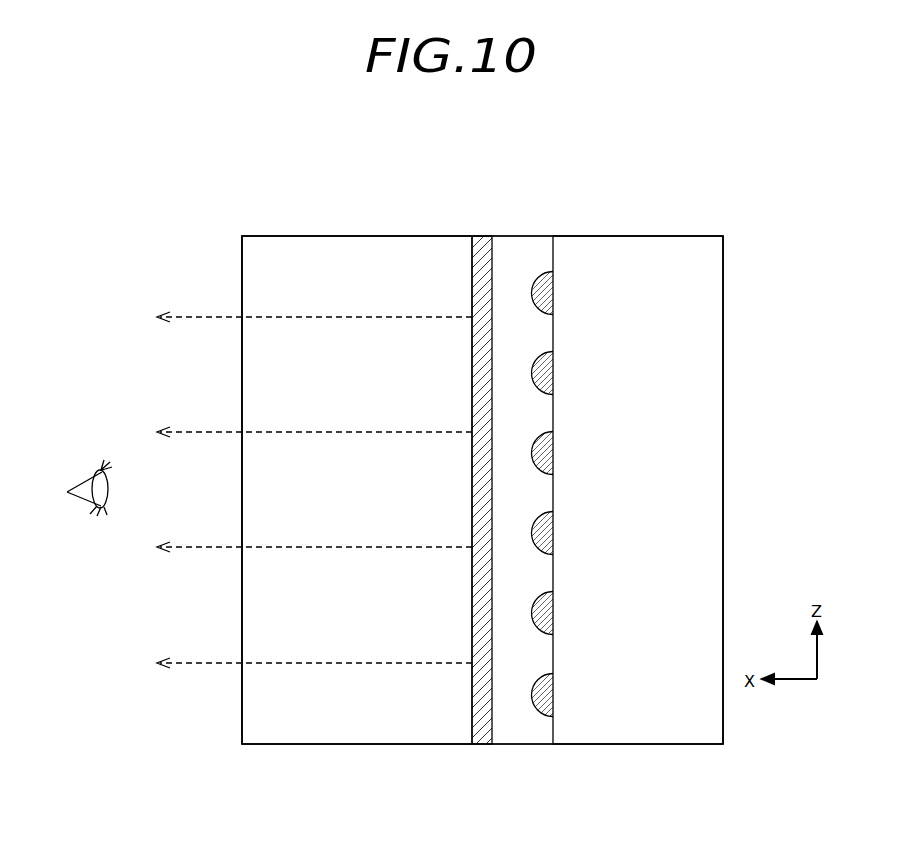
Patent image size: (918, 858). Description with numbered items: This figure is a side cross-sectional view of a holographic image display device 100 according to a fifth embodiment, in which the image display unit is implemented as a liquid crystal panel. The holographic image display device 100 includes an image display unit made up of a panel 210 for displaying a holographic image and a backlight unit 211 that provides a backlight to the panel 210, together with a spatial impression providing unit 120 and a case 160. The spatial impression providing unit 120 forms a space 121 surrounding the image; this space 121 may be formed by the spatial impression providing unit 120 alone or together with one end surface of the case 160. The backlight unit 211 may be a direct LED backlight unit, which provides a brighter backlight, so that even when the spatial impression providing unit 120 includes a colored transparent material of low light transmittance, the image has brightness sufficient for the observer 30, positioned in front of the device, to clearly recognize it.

The holographic image display device 100 is at (510, 142).
The spatial impression providing unit 120 is at (382, 237).
The space 121 is at (287, 259).
The panel 210 is at (484, 750).
The backlight unit 211 is at (508, 259).
The case 160 is at (650, 468).
The observer 30 is at (72, 497).